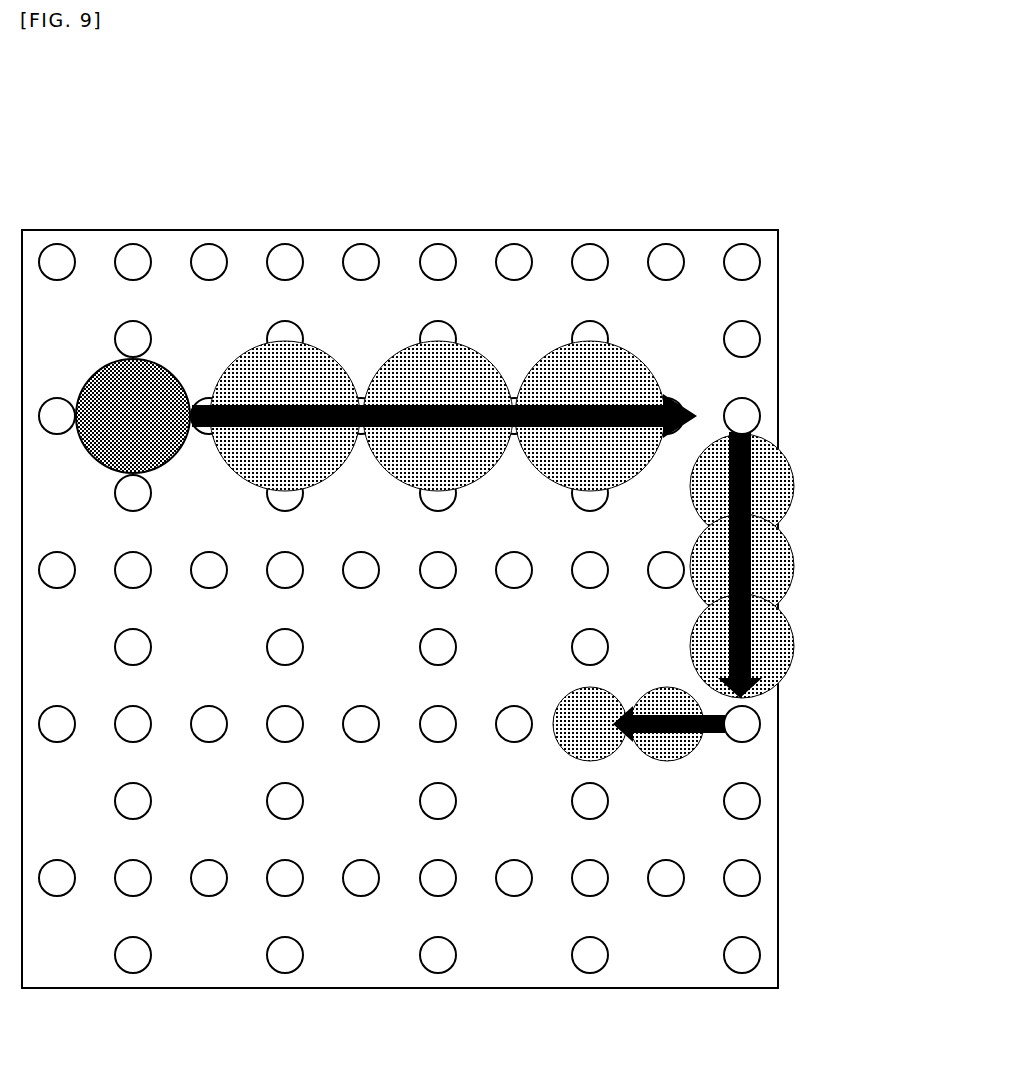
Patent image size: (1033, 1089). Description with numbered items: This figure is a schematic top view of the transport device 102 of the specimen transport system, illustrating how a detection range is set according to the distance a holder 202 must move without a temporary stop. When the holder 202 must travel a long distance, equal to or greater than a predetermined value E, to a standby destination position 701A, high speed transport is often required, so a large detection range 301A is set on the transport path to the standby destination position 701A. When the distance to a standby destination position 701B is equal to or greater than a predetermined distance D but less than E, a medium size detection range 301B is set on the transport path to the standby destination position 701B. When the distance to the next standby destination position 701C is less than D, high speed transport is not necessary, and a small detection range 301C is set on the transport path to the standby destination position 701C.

The transport device 102 is at (722, 87).
The holder 202 is at (143, 358).
The detection range 301A is at (297, 341).
The detection range 301B is at (778, 490).
The detection range 301C is at (562, 742).
The standby destination position 701A is at (742, 417).
The standby destination position 701B is at (745, 725).
The next standby destination position 701C is at (593, 733).